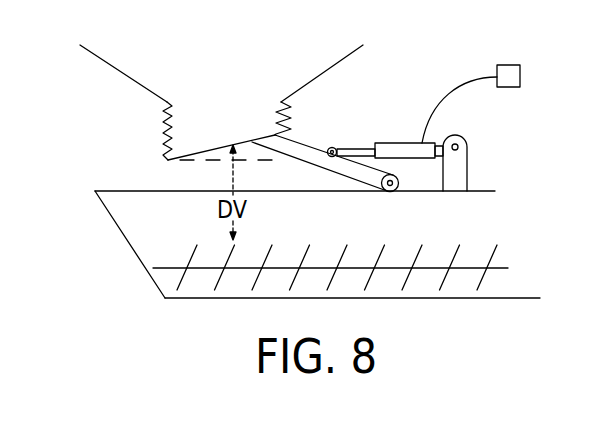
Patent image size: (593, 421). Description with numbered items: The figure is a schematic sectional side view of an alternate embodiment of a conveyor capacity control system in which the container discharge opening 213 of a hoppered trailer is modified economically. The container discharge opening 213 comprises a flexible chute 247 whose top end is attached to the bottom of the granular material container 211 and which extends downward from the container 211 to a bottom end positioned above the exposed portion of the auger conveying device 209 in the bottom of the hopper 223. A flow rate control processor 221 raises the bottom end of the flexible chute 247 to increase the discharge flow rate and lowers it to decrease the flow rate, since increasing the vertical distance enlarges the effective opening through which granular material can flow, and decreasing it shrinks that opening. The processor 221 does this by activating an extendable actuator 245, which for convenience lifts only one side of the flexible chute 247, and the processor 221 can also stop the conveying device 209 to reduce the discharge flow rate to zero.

The granular material container 211 is at (110, 68).
The container discharge opening 213 is at (187, 130).
The flexible chute 247 is at (166, 148).
The hopper 223 is at (107, 208).
The auger conveying device 209 is at (195, 250).
The extendable actuator 245 is at (385, 143).
The flow rate control processor 221 is at (508, 65).